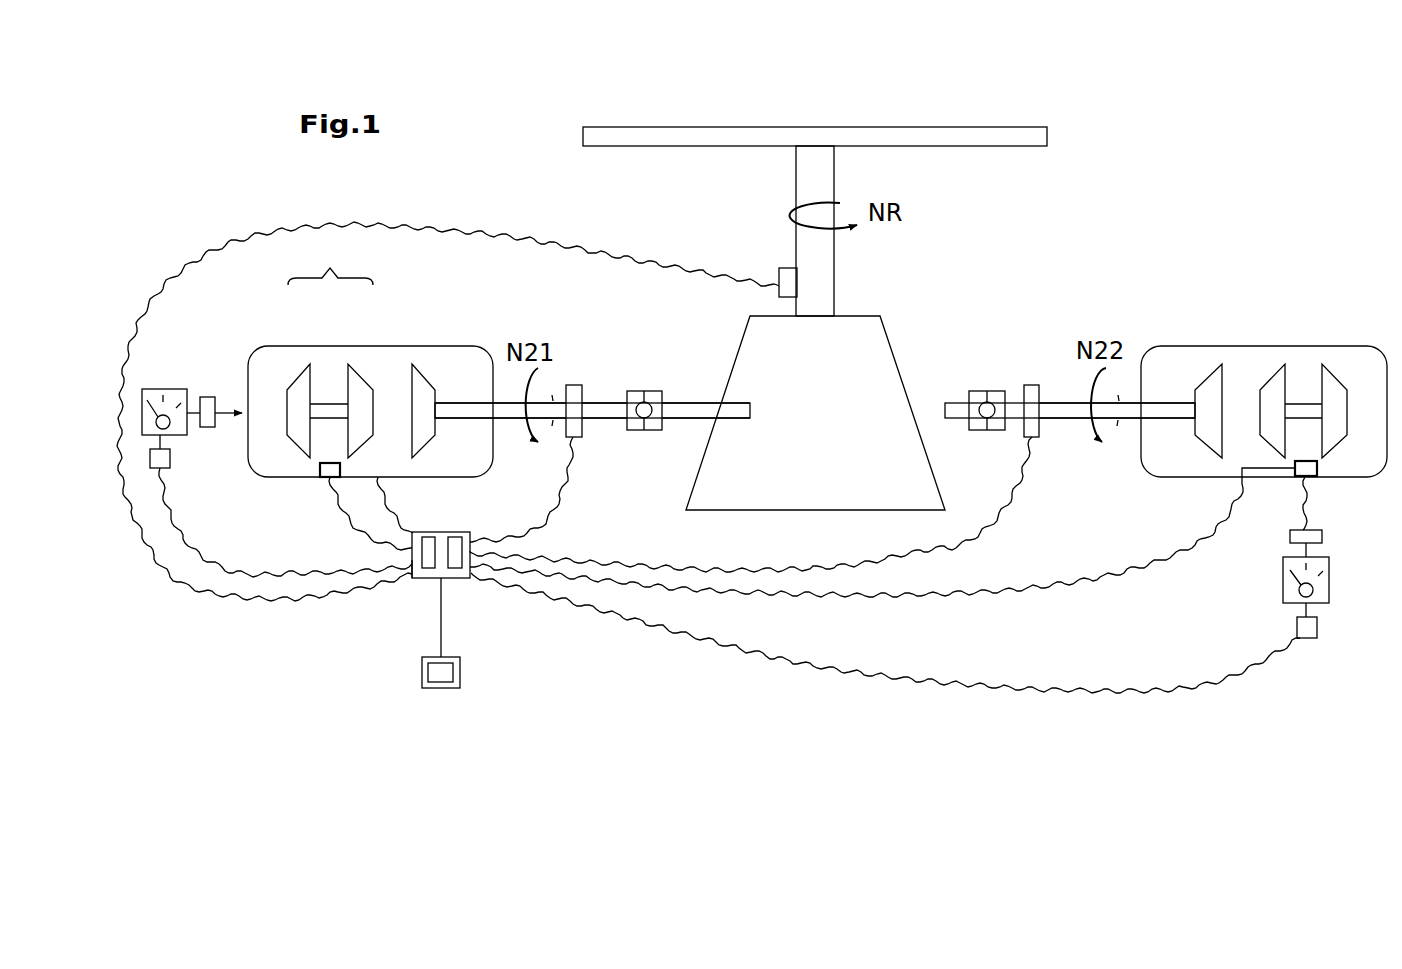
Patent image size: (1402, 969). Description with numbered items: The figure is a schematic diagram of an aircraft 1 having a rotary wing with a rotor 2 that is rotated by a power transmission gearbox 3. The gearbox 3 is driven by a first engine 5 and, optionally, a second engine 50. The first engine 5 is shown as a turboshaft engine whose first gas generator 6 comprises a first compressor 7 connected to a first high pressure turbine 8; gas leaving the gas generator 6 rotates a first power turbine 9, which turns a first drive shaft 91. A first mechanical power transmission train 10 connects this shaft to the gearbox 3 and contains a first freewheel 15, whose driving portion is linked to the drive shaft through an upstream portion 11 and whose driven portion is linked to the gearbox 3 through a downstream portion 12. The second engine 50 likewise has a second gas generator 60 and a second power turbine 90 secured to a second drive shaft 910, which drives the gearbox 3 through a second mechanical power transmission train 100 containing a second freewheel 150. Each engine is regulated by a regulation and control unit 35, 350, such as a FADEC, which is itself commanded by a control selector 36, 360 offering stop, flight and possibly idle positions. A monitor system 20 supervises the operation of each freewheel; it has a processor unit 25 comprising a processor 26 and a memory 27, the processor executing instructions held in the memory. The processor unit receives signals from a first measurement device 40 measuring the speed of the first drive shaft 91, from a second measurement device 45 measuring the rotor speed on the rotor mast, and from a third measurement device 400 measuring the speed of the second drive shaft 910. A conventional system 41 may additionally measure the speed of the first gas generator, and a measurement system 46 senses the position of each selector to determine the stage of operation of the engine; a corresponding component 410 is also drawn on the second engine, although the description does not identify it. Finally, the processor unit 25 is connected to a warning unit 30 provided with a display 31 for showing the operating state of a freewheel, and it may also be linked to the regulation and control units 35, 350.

The aircraft 1 is at (886, 100).
The rotor 2 is at (660, 127).
The power transmission gearbox 3 is at (862, 316).
The first engine 5 is at (370, 402).
The first gas generator 6 is at (330, 347).
The first compressor 7 is at (293, 365).
The first high pressure turbine 8 is at (365, 380).
The first power turbine 9 is at (430, 380).
The first mechanical power transmission train 10 is at (600, 460).
The upstream portion 11 is at (605, 403).
The downstream portion 12 is at (685, 403).
The first freewheel 15 is at (648, 391).
The monitor system 20 is at (411, 578).
The processor unit 25 is at (410, 582).
The processor 26 is at (430, 537).
The memory 27 is at (455, 570).
The warning unit 30 is at (448, 689).
The display 31 is at (440, 688).
The regulation and control unit 35 is at (208, 397).
The control selector 36 is at (176, 389).
The first measurement device 40 is at (575, 378).
The conventional system 41 is at (320, 470).
The second measurement device 45 is at (786, 268).
The measurement system 46 is at (170, 457).
The second engine 50 is at (1283, 492).
The second gas generator 60 is at (1303, 378).
The second power turbine 90 is at (1205, 370).
The first drive shaft 91 is at (468, 402).
The second mechanical power transmission train 100 is at (1010, 456).
The second freewheel 150 is at (978, 380).
The regulation and control unit 350 is at (1322, 537).
The control selector 360 is at (1283, 578).
The third measurement device 400 is at (1036, 378).
The second transmission ratio sensor 410 is at (1317, 468).
The second drive shaft 910 is at (1165, 402).